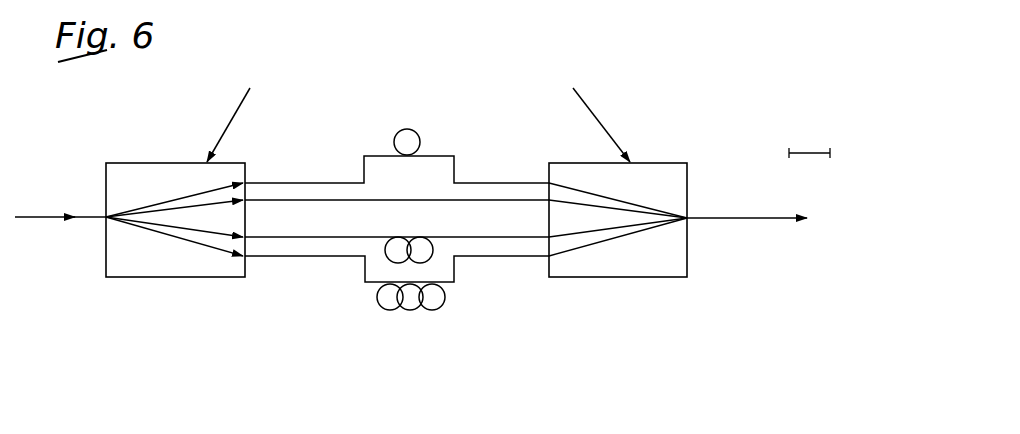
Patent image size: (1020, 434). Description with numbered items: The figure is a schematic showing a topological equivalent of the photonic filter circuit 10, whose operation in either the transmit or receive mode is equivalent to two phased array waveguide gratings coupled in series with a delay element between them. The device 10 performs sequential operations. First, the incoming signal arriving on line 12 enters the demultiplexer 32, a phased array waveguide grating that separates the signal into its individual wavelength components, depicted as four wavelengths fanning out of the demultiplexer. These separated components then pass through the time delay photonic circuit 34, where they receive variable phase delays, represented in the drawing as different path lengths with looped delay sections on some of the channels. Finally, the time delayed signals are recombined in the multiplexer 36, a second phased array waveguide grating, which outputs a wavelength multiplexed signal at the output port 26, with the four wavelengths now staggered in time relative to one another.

The circuit 10 is at (712, 350).
The line 12 is at (42, 215).
The output port 26 is at (745, 218).
The demultiplexer 32 is at (107, 277).
The time delay photonic circuit 34 is at (540, 350).
The multiplexer 36 is at (678, 278).